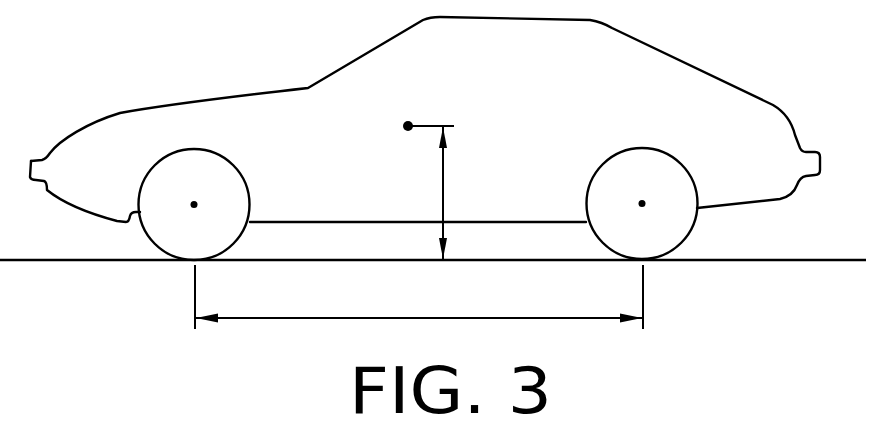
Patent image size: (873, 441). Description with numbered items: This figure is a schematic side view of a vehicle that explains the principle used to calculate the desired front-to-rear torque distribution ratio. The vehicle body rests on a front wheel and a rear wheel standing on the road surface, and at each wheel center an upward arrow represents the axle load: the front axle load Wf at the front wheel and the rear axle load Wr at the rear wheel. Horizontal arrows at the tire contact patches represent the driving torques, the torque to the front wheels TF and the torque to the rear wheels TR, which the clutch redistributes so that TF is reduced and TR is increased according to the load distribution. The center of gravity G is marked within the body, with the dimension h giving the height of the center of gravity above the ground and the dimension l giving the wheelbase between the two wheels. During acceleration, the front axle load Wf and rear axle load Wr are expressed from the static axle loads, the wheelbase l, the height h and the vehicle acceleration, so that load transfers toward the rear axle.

The front axle load Wf is at (194, 204).
The rear axle load Wr is at (642, 203).
The torque to the front wheels TF is at (133, 244).
The torque to the rear wheels TR is at (590, 244).
The center of gravity G is at (400, 110).
The height of the center of gravity h is at (437, 193).
The wheelbase l is at (419, 297).